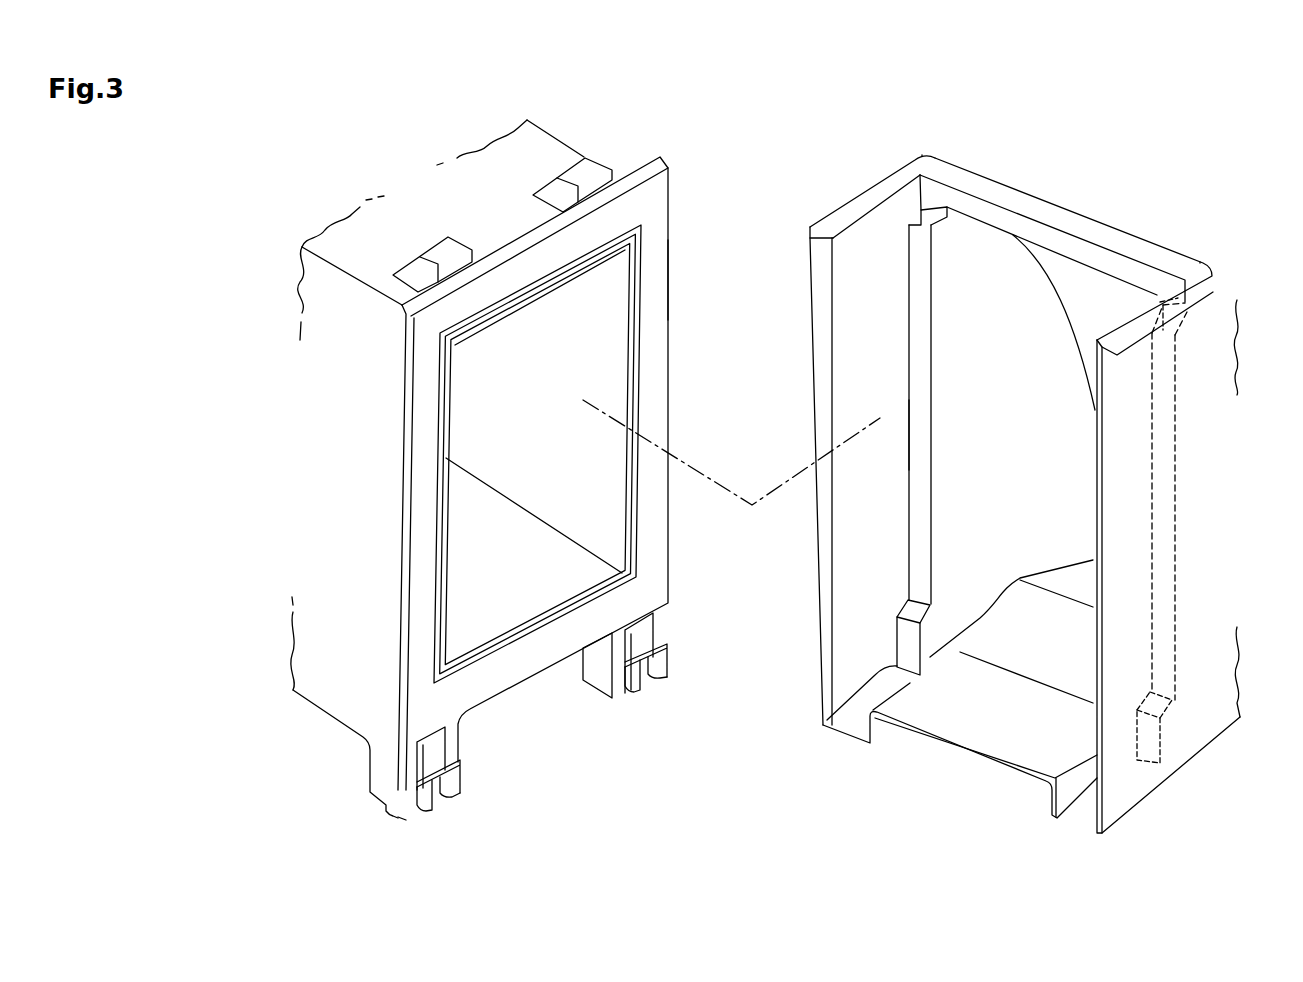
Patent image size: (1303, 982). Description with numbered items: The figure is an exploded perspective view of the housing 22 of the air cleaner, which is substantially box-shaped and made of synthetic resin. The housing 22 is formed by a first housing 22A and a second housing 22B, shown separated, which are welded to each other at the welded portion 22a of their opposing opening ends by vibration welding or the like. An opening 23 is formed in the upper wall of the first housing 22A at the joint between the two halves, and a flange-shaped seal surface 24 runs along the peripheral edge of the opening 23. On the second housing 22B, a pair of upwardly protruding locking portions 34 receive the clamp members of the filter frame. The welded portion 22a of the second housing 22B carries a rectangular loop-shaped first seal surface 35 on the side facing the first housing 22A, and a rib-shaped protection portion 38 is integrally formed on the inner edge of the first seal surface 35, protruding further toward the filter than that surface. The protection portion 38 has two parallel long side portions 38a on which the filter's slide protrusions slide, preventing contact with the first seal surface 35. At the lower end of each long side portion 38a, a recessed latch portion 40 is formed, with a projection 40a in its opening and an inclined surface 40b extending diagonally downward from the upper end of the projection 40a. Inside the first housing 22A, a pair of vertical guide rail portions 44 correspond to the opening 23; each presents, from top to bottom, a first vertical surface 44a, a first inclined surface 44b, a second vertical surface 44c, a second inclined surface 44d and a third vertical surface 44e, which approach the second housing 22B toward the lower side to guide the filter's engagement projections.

The housing 22 is at (1048, 472).
The first housing 22A is at (1205, 727).
The second housing 22B is at (535, 127).
The welded portion 22a is at (668, 200).
The opening 23 is at (880, 188).
The seal surface 24 is at (1042, 203).
The locking portion 34 is at (448, 237).
The first seal surface 35 is at (668, 276).
The protection portion 38 is at (540, 290).
The long side portion 38a is at (641, 322).
The latch portion 40 is at (574, 705).
The projection 40a is at (460, 775).
The inclined surface 40b is at (445, 760).
The guide rail portion 44 is at (931, 345).
The first vertical surface 44a is at (935, 190).
The first inclined surface 44b is at (935, 228).
The second vertical surface 44c is at (925, 432).
The second inclined surface 44d is at (917, 607).
The third vertical surface 44e is at (897, 627).